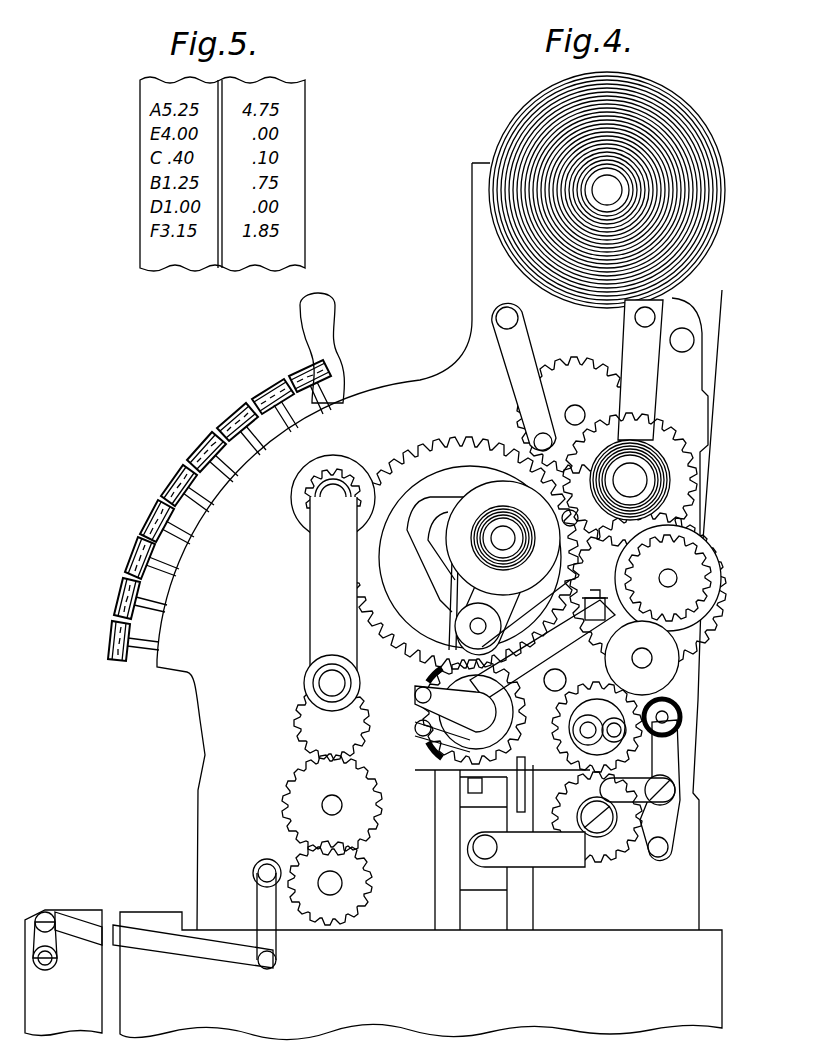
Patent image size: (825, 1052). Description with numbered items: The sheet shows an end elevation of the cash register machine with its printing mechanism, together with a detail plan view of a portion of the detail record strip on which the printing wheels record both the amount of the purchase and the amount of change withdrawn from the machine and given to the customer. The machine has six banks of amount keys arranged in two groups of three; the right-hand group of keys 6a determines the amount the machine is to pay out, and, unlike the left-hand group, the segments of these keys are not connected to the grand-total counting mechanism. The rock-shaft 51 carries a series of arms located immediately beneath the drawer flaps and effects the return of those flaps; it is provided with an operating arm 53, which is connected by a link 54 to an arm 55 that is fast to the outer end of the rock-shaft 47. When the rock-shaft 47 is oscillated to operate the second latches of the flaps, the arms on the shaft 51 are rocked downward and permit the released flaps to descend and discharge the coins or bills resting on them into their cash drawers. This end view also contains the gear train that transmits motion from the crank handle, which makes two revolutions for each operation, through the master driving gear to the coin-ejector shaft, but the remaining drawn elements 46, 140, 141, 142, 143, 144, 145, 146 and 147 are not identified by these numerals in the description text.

The keys 6a is at (190, 472).
The plate 46 is at (512, 680).
The rock-shaft 47 is at (318, 578).
The rock-shaft 51 is at (45, 965).
The operating arm 53 is at (50, 935).
The link 54 is at (188, 948).
The arm 55 is at (280, 936).
The shaft 140 is at (362, 905).
The gear 141 is at (345, 884).
The gear 142 is at (292, 792).
The gear 143 is at (296, 728).
The ratchet wheel 144 is at (422, 676).
The gear wheel 145 is at (452, 448).
The pinion 146 is at (335, 475).
The bushing 147 is at (300, 497).